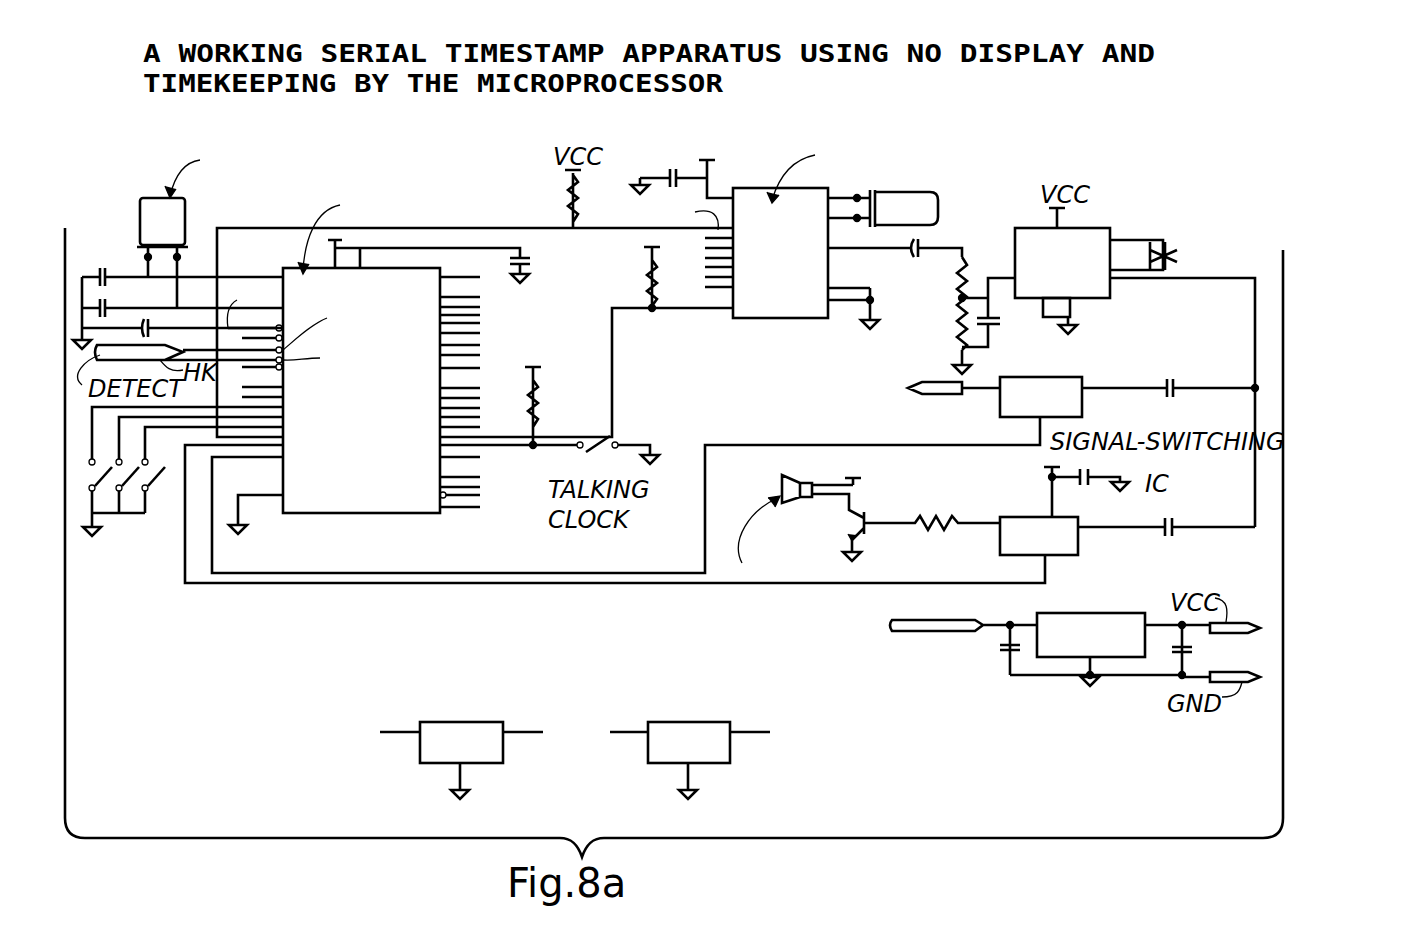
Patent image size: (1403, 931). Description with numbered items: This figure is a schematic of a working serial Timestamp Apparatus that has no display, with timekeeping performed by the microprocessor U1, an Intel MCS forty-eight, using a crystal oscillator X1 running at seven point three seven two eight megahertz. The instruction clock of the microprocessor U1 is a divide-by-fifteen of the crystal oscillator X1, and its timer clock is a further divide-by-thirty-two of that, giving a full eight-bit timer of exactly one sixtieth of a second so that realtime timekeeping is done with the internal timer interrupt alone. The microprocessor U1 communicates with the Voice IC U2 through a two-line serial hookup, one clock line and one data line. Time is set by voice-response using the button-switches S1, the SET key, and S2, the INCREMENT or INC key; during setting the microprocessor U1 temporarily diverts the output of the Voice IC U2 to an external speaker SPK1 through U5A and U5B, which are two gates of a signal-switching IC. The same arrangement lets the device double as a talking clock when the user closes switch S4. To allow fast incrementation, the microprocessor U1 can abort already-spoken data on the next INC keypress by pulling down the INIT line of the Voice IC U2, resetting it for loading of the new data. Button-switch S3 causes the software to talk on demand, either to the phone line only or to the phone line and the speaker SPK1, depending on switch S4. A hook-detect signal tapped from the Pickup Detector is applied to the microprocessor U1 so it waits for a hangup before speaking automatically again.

The crystal oscillator X1 is at (179, 240).
The microprocessor U1 is at (364, 479).
The Voice IC U2 is at (800, 273).
The gate of signal-switching IC U5A is at (1070, 412).
The gate of signal-switching IC U5B is at (1065, 551).
The SET key button-switch S1 is at (90, 486).
The INCREMENT key button-switch S2 is at (113, 468).
The talk-on-demand button-switch S3 is at (150, 492).
The talking clock switch S4 is at (600, 447).
The external speaker SPK1 is at (797, 475).